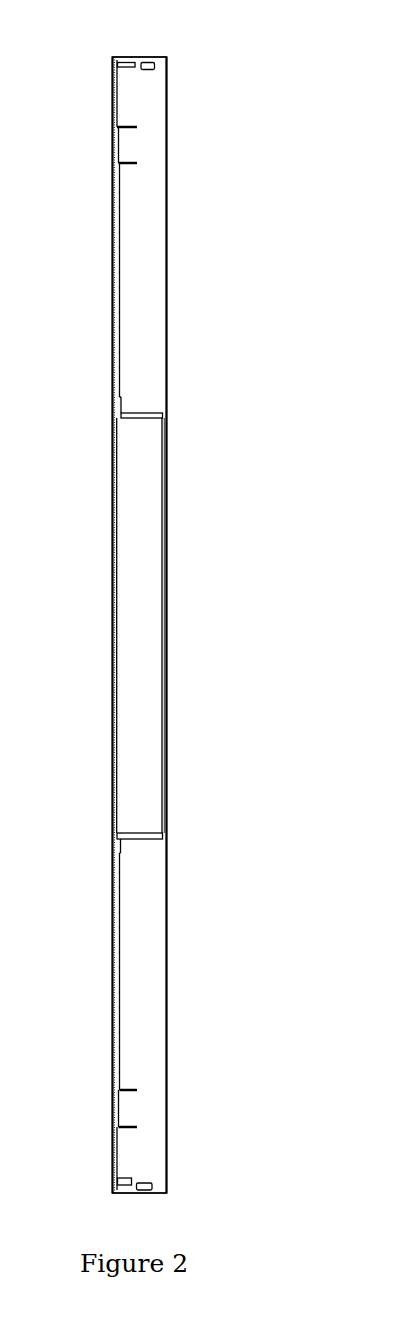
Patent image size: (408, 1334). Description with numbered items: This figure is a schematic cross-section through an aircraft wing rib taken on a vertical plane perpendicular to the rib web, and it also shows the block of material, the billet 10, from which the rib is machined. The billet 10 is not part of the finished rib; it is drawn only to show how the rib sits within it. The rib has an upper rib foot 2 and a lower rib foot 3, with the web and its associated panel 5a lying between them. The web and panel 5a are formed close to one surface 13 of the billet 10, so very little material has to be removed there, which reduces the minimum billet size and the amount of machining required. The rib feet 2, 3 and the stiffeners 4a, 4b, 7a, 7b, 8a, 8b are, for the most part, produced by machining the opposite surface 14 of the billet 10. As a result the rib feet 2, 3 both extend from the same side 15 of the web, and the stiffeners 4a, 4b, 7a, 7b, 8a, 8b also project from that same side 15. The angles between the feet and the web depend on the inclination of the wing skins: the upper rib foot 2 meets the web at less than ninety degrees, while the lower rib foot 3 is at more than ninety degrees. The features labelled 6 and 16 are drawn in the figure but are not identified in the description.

The upper rib foot 2 is at (134, 47).
The lower rib foot 3 is at (157, 1180).
The stiffener 4a is at (115, 116).
The stiffener 4b is at (148, 1126).
The panel 5a is at (103, 218).
The central chamber 6 is at (150, 608).
The stiffener 7a is at (158, 403).
The stiffener 7b is at (156, 827).
The stiffener 8a is at (112, 155).
The stiffener 8b is at (145, 1082).
The billet 10 is at (174, 110).
The surface of the billet 13 is at (102, 339).
The surface of the billet 14 is at (177, 239).
The side of the web 15 is at (133, 316).
The inner wall section 16 is at (104, 280).